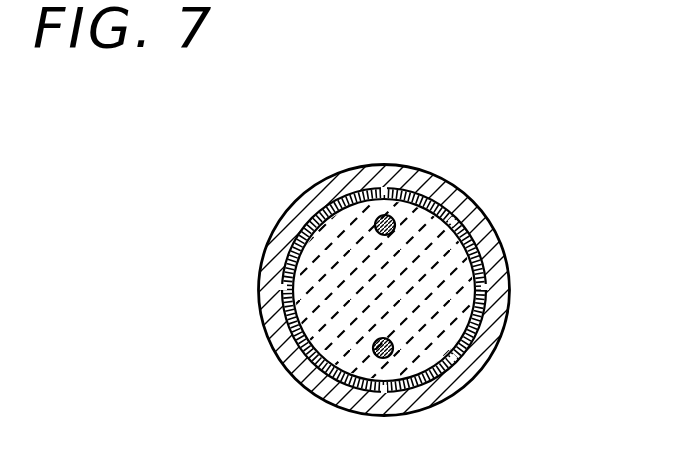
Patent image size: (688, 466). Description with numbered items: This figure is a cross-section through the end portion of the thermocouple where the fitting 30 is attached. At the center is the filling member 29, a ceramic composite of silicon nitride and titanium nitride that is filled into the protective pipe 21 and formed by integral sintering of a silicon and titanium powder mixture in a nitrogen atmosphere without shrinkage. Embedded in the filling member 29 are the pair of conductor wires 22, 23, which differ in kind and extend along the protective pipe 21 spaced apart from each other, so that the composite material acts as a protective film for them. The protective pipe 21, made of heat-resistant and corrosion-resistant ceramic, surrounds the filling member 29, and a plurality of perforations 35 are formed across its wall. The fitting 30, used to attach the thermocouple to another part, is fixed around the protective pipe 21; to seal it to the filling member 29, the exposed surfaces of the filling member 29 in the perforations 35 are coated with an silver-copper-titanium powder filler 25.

The protective pipe 21 is at (337, 197).
The conductor wire 22 is at (394, 217).
The conductor wire 23 is at (344, 387).
The filler 25 is at (458, 216).
The filling member 29 is at (340, 292).
The fitting 30 is at (492, 221).
The perforations 35 is at (302, 216).